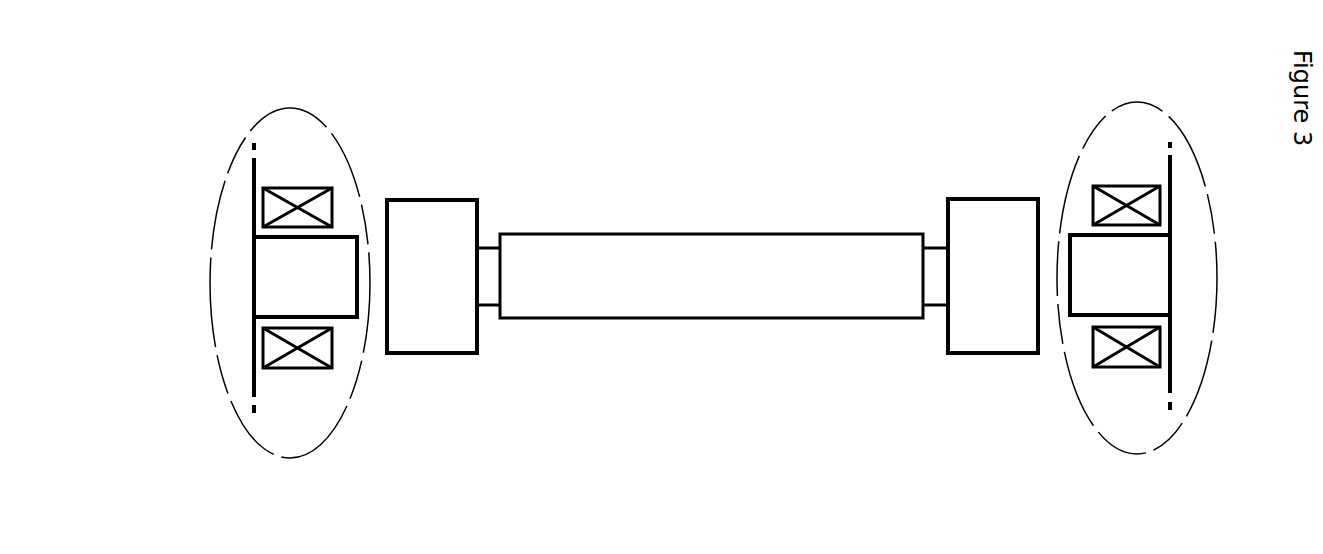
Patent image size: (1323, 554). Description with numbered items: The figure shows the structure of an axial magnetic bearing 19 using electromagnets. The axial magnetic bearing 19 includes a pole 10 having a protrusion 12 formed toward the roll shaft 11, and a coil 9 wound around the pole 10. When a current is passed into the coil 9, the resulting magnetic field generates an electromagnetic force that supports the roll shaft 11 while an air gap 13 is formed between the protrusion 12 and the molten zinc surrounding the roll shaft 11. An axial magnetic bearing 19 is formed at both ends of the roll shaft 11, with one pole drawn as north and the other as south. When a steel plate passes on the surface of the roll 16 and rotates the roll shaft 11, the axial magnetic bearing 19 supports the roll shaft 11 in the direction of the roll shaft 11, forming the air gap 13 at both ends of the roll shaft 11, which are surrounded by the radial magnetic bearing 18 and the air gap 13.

The coil 9 is at (297, 208).
The pole 10 is at (280, 278).
The roll shaft 11 is at (485, 258).
The protrusion 12 is at (371, 282).
The air gap 13 is at (368, 292).
The roll 16 is at (652, 300).
The radial magnetic bearing 18 is at (412, 213).
The axial magnetic bearing 19 is at (250, 130).